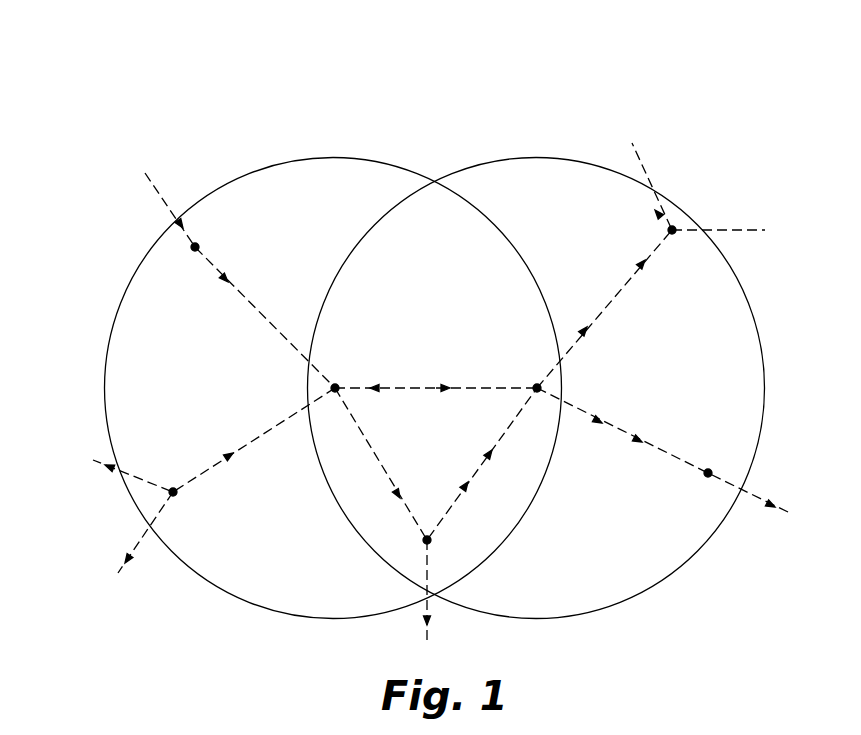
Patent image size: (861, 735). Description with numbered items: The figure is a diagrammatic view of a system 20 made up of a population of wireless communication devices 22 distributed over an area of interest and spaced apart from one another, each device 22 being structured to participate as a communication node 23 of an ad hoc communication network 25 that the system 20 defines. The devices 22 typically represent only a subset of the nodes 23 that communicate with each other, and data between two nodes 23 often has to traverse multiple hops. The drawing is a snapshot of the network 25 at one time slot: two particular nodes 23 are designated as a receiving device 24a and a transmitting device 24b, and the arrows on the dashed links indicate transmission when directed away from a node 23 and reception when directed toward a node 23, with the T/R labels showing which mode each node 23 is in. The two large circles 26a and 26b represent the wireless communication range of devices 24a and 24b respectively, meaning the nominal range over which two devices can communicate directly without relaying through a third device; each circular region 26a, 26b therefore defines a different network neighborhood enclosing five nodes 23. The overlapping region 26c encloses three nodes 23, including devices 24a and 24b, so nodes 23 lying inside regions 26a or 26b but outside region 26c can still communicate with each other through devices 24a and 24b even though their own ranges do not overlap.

The system 20 is at (758, 95).
The wireless communication device 22 is at (200, 246).
The communication node 23 is at (190, 247).
The receiving device 24a is at (340, 372).
The transmitting device 24b is at (528, 372).
The communication network 25 is at (723, 583).
The wireless communication range circle 26a is at (105, 400).
The wireless communication range circle 26b is at (765, 358).
The overlapping region 26c is at (430, 245).